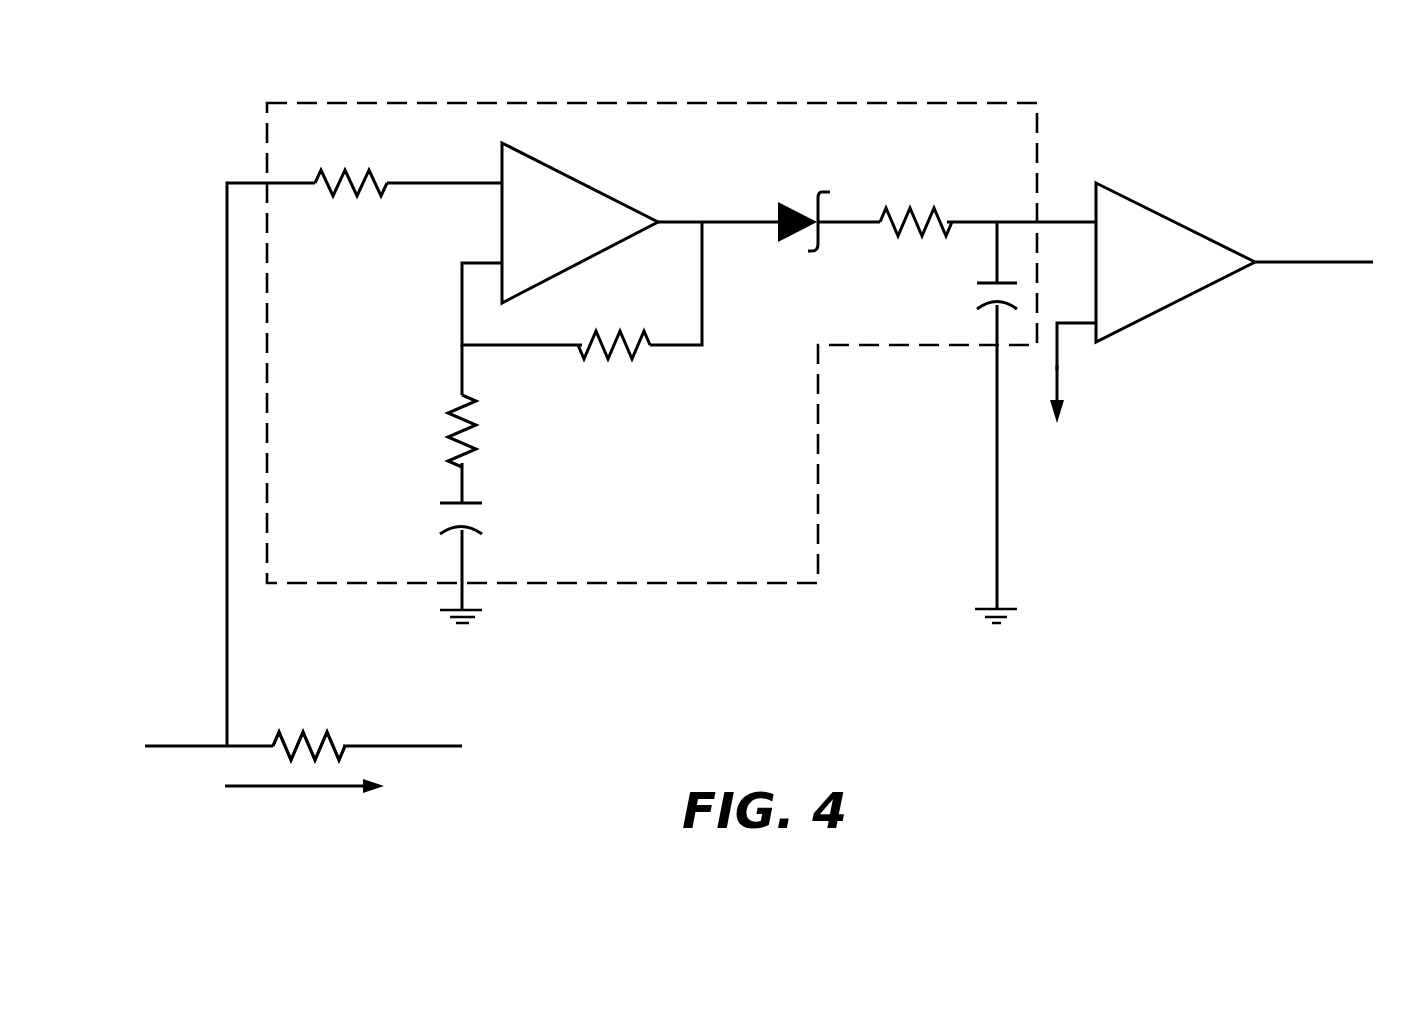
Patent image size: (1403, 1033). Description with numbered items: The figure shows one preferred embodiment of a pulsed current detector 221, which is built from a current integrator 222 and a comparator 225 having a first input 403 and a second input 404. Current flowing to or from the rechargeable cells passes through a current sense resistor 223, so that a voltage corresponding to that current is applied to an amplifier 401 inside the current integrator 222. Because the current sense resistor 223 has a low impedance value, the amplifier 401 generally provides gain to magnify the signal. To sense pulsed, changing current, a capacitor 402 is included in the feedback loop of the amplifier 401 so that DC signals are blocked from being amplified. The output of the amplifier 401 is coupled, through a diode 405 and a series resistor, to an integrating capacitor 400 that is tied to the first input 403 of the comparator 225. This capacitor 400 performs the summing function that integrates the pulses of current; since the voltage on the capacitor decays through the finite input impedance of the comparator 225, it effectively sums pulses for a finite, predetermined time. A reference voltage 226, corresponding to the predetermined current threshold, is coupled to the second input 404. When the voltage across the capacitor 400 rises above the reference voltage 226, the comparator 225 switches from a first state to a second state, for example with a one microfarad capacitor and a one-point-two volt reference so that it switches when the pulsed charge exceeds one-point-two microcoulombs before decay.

The pulsed current detector 221 is at (1090, 630).
The current integrator 222 is at (898, 102).
The current sense resistor 223 is at (280, 727).
The comparator 225 is at (1175, 268).
The reference voltage 226 is at (1057, 365).
The integrating capacitor 400 is at (987, 288).
The amplifier 401 is at (563, 238).
The capacitor 402 is at (480, 518).
The first input 403 is at (1022, 222).
The second input 404 is at (1075, 323).
The zener diode 405 is at (790, 203).